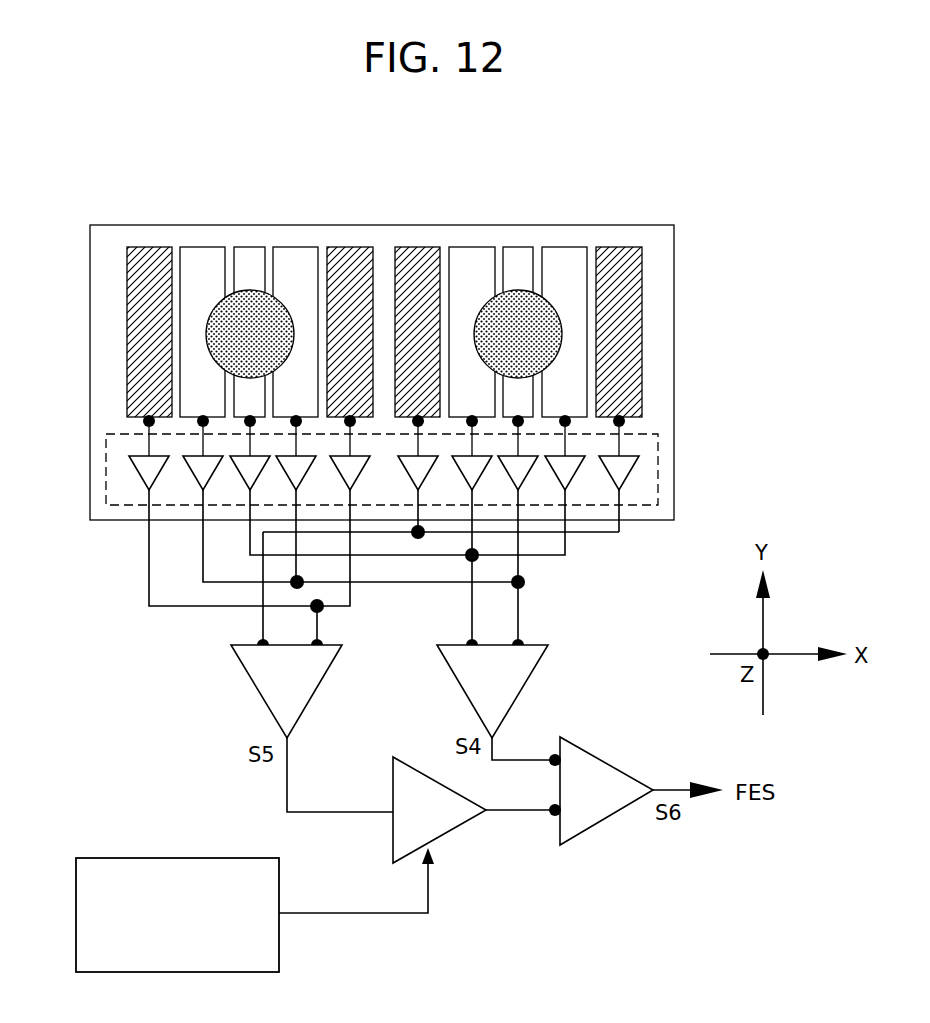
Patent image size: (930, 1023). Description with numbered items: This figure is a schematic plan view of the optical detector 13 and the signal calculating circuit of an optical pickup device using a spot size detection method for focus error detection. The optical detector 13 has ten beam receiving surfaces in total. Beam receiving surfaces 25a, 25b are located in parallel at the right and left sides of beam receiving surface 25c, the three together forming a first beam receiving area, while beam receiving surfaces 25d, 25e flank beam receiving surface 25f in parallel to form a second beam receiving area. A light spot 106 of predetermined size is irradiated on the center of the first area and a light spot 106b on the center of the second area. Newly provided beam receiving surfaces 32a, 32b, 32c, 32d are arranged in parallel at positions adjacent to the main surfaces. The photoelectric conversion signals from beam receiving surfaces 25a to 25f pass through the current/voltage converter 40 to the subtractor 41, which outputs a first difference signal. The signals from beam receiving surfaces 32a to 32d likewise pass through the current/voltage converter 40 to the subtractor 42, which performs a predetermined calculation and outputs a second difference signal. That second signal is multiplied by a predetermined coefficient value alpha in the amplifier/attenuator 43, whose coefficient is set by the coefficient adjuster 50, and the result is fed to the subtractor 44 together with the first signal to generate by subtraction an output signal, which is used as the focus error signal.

The optical detector 13 is at (90, 463).
The current/voltage converter 40 is at (658, 458).
The beam receiving surface 32a is at (148, 255).
The beam receiving surface 32b is at (347, 258).
The beam receiving surface 32c is at (415, 258).
The beam receiving surface 32d is at (622, 258).
The beam receiving surface 25a is at (195, 258).
The beam receiving surface 25b is at (292, 255).
The beam receiving surface 25c is at (247, 258).
The beam receiving surface 25d is at (470, 262).
The beam receiving surface 25e is at (560, 262).
The beam receiving surface 25f is at (515, 258).
The light spot 106 is at (218, 329).
The light spot 106b is at (547, 330).
The subtractor 41 is at (520, 688).
The subtractor 42 is at (252, 689).
The amplifier/attenuator 43 is at (454, 832).
The subtractor 44 is at (597, 818).
The coefficient adjuster 50 is at (133, 858).